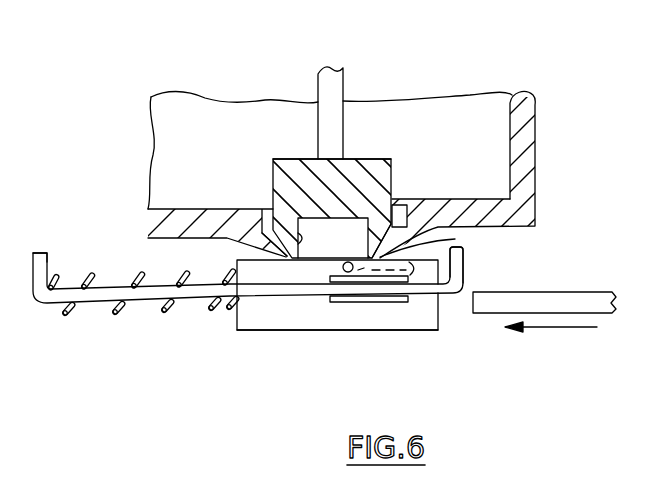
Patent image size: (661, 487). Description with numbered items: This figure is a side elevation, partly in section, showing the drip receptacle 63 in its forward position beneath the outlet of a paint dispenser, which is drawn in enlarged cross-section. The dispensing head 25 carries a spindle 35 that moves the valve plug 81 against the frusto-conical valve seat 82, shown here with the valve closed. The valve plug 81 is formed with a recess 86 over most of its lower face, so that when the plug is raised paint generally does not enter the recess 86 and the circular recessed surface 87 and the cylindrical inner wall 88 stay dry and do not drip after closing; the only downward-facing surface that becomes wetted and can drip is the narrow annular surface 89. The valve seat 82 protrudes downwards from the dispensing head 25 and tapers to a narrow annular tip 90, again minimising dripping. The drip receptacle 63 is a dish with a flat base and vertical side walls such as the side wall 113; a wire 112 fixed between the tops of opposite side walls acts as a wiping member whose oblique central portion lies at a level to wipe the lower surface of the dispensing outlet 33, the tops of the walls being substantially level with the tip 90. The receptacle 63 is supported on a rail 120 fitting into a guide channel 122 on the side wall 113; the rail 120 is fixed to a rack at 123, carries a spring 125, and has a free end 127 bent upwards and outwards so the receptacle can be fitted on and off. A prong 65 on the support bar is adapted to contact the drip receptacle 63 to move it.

The dispensing head 25 is at (518, 192).
The dispensing outlet 33 is at (320, 230).
The spindle 35 is at (318, 74).
The drip receptacle 63 is at (323, 340).
The prong 65 is at (568, 303).
The valve plug 81 is at (357, 167).
The valve seat 82 is at (281, 252).
The recess 86 is at (348, 231).
The circular recessed surface 87 is at (316, 252).
The cylindrical inner wall 88 is at (272, 209).
The narrow annular surface 89 is at (378, 256).
The narrow annular tip 90 is at (285, 257).
The wire 112 is at (455, 239).
The side wall 113 is at (273, 330).
The rail 120 is at (252, 303).
The guide channel 122 is at (388, 302).
The rail fixing point 123 is at (64, 247).
The spring 125 is at (171, 315).
The free end of rail 127 is at (452, 292).